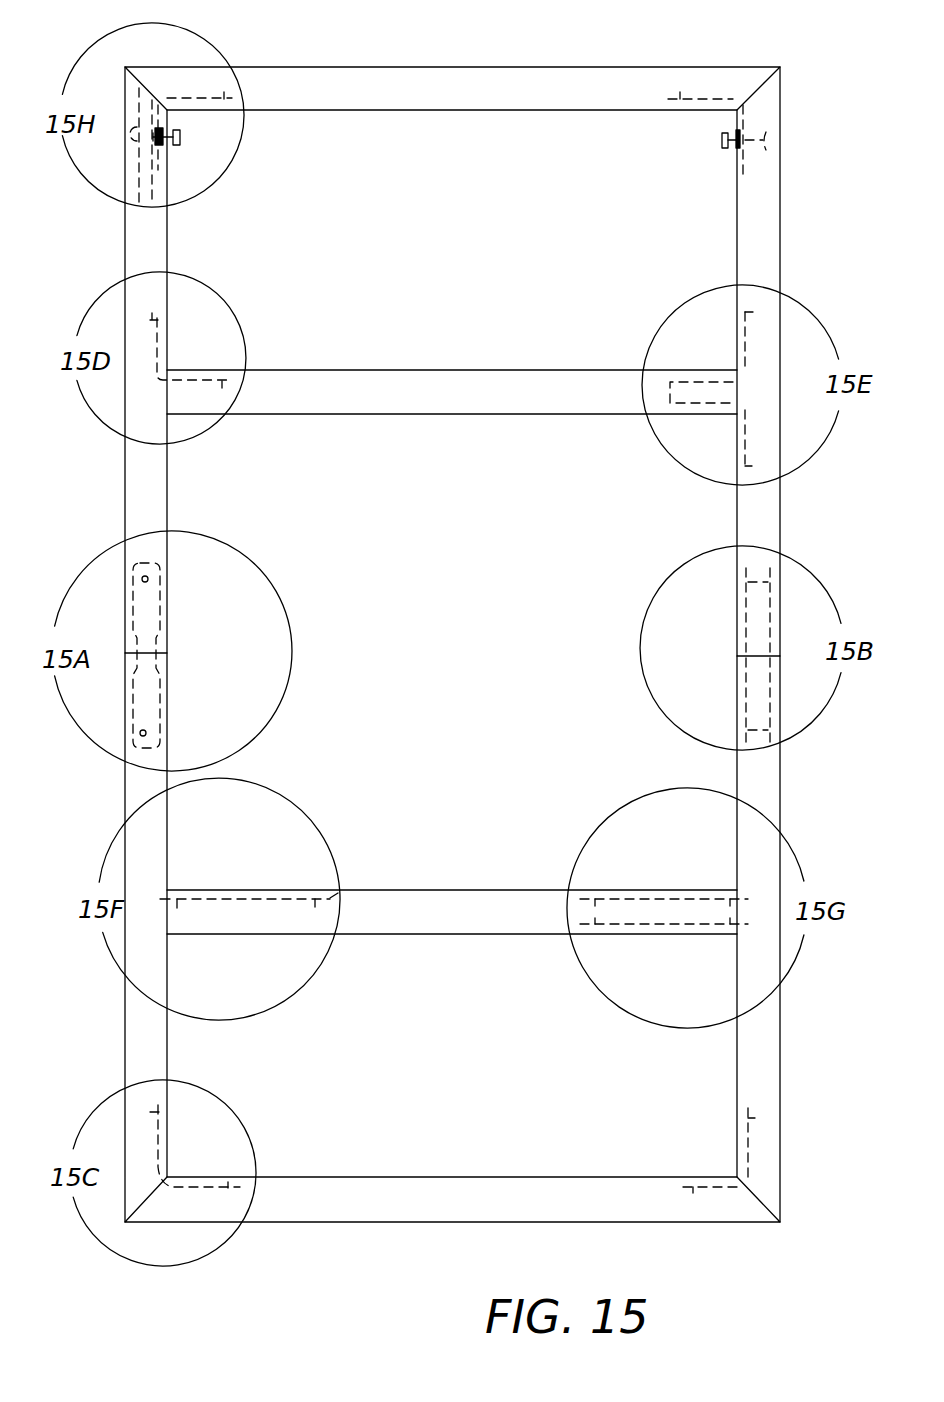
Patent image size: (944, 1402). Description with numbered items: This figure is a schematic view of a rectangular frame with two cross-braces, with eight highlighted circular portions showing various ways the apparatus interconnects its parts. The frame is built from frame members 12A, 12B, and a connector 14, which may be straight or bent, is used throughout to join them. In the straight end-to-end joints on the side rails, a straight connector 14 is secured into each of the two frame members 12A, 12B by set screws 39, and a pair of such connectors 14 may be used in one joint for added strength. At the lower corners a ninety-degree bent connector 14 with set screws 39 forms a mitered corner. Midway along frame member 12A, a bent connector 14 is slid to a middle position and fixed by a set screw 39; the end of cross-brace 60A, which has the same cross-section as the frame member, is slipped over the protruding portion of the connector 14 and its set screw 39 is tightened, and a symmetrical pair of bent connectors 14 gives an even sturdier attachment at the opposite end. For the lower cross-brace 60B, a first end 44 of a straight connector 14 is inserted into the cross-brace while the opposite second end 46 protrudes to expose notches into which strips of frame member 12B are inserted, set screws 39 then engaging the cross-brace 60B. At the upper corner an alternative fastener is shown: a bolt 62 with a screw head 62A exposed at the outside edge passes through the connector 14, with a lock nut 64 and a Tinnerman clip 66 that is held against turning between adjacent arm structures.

The frame member 12A is at (168, 480).
The frame member 12B is at (170, 779).
The connector 14 is at (187, 97).
The set screw 39 is at (226, 96).
The first end 44 is at (333, 896).
The second end 46 is at (160, 899).
The cross-brace 60A is at (320, 370).
The cross-brace 60B is at (430, 889).
The bolt 62 is at (162, 143).
The screw head 62A is at (133, 137).
The bolt head 64 is at (180, 134).
The Tinnerman clip 66 is at (163, 147).